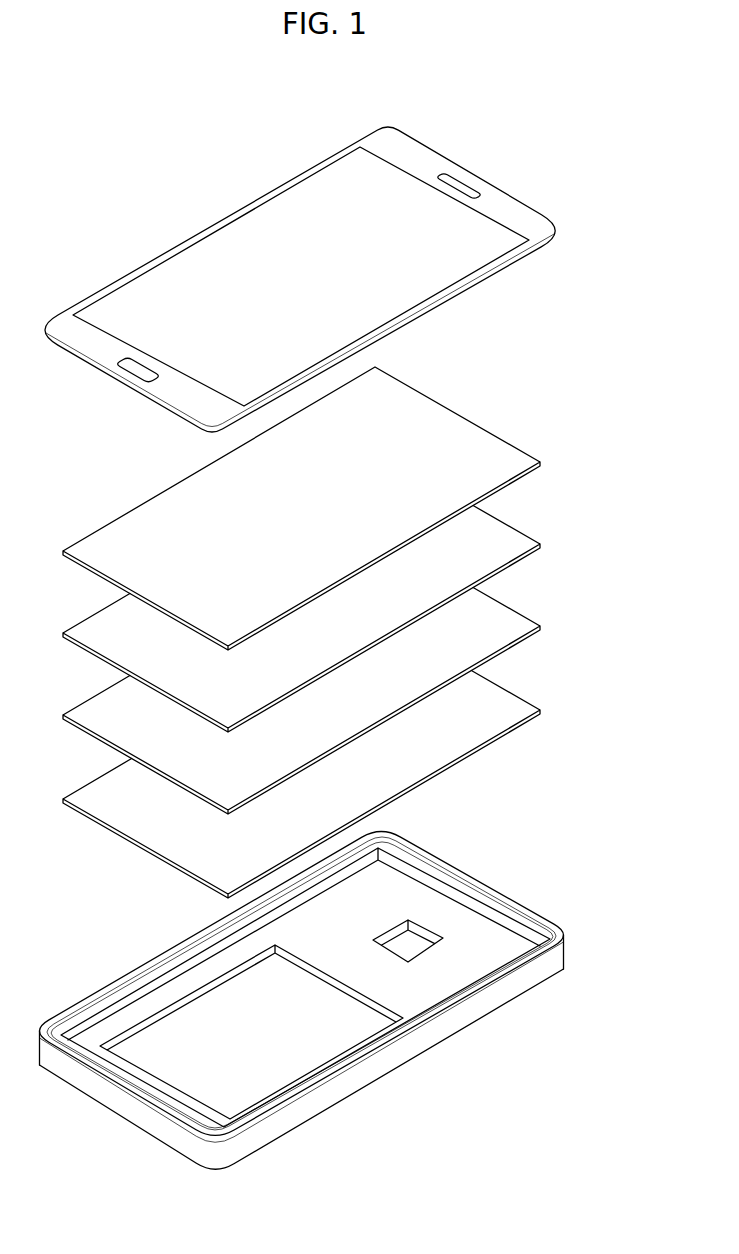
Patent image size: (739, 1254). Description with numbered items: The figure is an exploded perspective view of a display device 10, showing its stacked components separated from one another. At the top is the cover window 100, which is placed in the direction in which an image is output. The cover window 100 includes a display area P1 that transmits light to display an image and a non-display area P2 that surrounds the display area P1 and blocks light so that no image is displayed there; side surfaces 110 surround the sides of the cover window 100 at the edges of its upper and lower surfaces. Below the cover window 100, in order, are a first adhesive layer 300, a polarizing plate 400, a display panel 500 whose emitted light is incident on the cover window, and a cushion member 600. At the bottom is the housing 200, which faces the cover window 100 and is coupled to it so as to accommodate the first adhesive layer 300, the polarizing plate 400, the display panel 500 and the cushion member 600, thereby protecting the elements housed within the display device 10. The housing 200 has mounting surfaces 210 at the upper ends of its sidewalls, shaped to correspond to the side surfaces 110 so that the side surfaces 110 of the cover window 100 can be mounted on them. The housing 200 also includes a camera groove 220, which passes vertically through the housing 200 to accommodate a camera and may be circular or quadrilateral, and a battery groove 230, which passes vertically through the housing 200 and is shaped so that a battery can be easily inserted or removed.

The display device 10 is at (340, 107).
The cover window 100 is at (514, 188).
The side surfaces 110 is at (555, 236).
The display area P1 is at (260, 224).
The non-display area P2 is at (418, 155).
The first adhesive layer 300 is at (515, 454).
The polarizing plate 400 is at (515, 536).
The display panel 500 is at (515, 618).
The cushion member 600 is at (515, 702).
The housing 200 is at (442, 878).
The mounting surfaces 210 is at (482, 880).
The camera groove 220 is at (420, 940).
The battery groove 230 is at (313, 1048).